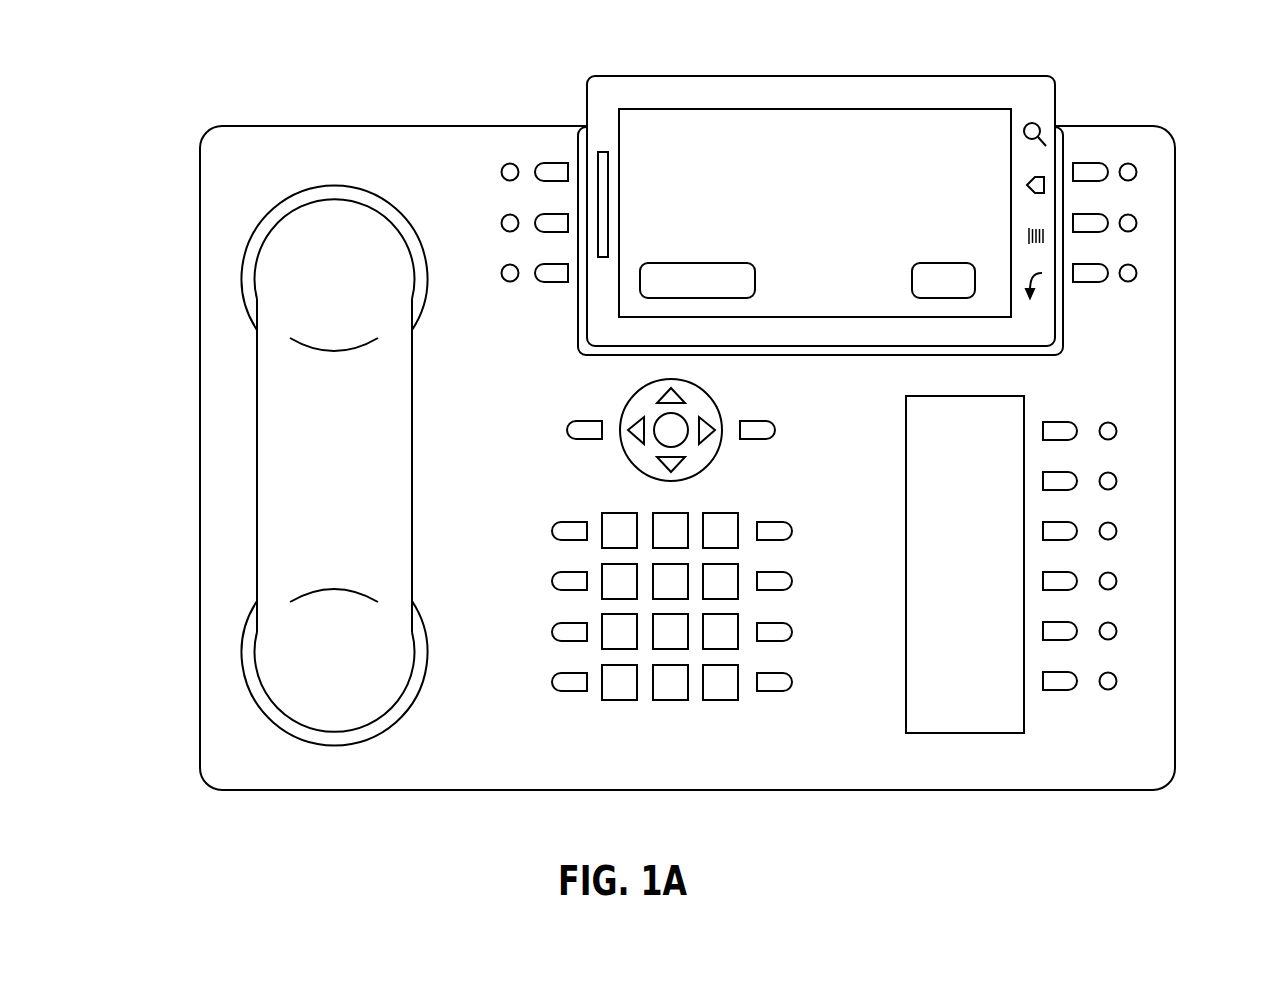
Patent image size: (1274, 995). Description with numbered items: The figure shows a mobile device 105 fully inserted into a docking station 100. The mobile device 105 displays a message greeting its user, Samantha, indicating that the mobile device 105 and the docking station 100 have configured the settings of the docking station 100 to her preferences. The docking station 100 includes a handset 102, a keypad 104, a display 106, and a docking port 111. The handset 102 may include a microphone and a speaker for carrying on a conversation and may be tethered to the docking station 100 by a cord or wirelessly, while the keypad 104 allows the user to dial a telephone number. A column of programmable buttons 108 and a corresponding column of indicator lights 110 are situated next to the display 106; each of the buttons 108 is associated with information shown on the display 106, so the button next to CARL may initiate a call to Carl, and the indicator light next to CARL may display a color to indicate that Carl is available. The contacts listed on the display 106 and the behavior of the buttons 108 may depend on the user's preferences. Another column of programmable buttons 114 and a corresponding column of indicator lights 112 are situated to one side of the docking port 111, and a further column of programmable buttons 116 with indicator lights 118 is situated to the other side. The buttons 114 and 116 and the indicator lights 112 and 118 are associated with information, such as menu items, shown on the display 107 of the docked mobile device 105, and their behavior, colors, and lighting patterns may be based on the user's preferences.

The docking station 100 is at (204, 125).
The handset 102 is at (257, 468).
The keypad 104 is at (584, 724).
The mobile device 105 is at (821, 179).
The display 106 is at (906, 532).
The display of mobile device 107 is at (797, 108).
The programmable buttons 108 is at (1053, 710).
The indicator lights 110 is at (1108, 710).
The docking port 111 is at (1022, 348).
The indicator lights 112 is at (506, 150).
The programmable buttons 114 is at (548, 150).
The programmable buttons 116 is at (1085, 147).
The indicator lights 118 is at (1128, 147).